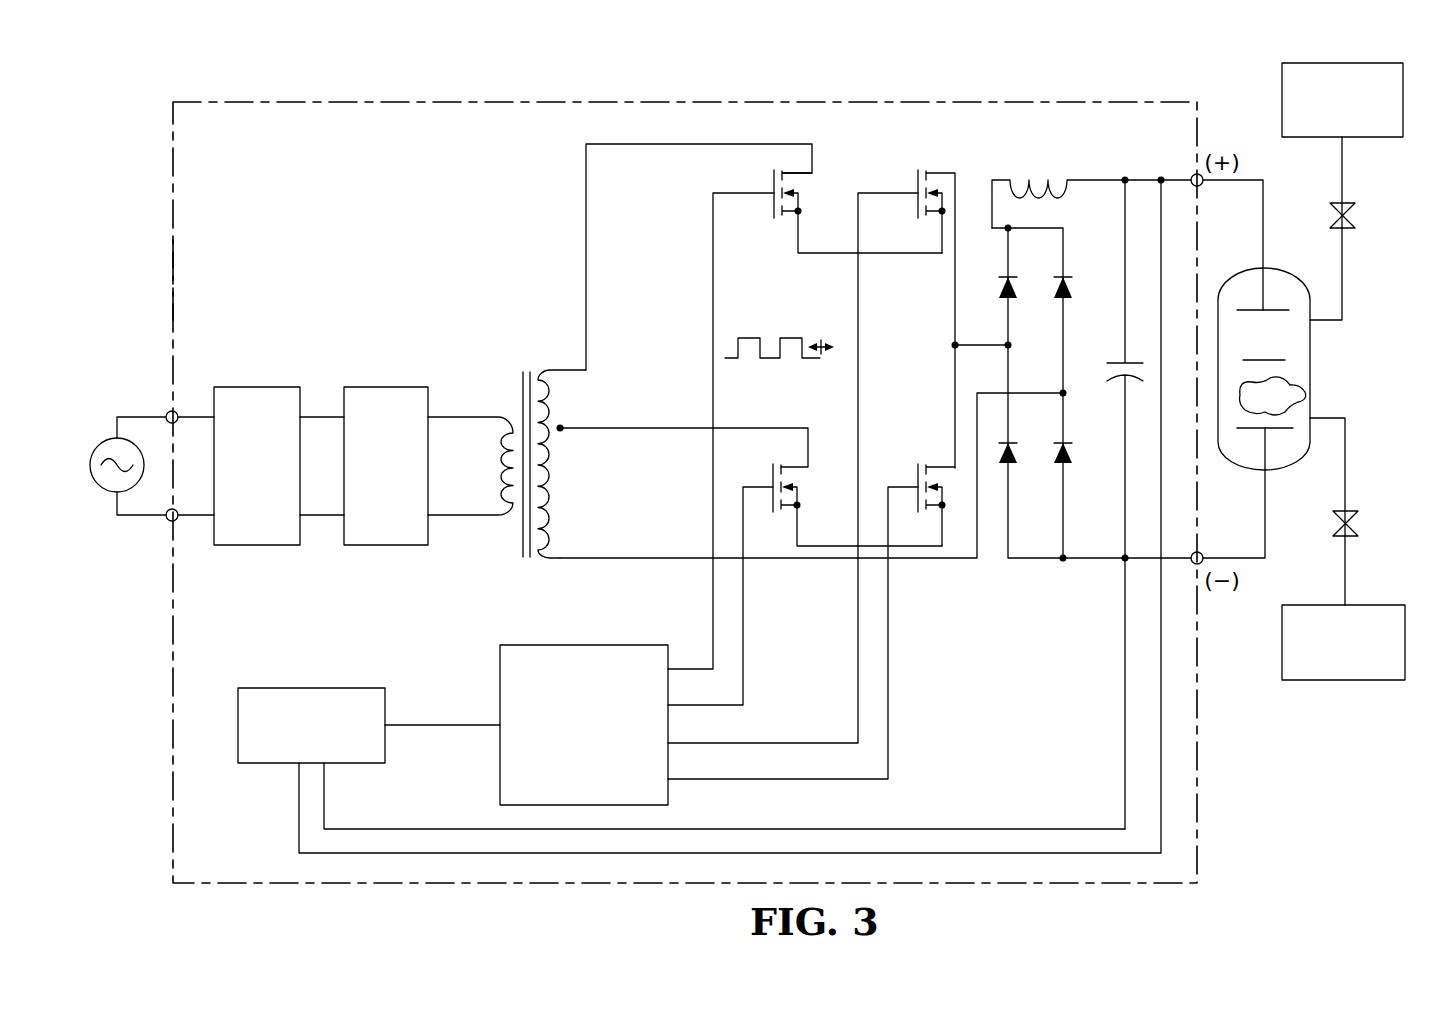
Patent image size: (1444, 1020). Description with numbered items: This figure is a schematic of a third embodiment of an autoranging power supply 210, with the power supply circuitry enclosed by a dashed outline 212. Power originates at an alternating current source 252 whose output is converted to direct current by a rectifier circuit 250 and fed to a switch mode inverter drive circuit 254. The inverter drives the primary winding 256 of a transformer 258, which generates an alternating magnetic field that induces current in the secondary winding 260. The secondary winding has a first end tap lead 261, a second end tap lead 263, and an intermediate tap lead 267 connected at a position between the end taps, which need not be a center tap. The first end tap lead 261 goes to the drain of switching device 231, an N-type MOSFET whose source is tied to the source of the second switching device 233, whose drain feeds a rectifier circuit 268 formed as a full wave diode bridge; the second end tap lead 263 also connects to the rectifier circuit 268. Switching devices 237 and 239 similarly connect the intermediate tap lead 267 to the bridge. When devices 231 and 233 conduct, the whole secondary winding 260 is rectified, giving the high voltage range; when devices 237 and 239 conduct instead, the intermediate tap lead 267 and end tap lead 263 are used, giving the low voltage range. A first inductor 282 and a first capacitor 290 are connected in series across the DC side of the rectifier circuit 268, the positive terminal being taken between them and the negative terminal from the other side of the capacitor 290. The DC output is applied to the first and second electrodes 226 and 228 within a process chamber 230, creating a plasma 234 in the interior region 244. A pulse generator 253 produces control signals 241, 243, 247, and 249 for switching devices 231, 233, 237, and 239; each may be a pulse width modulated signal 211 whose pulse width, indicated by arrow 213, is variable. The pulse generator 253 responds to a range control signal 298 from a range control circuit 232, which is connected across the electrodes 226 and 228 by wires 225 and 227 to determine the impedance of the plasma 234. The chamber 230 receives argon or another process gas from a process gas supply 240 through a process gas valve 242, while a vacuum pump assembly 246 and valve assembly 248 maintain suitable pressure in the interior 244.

The autoranging power supply 210 is at (162, 277).
The pulsed DC power supply 212 is at (192, 74).
The alternating current source 252 is at (100, 440).
The rectifier circuit 250 is at (250, 387).
The switch mode inverter drive circuit 254 is at (378, 387).
The primary winding 256 is at (482, 516).
The transformer 258 is at (514, 383).
The secondary winding 260 is at (565, 369).
The first end tap lead 261 is at (586, 300).
The intermediate tap lead 267 is at (637, 428).
The second end tap lead 263 is at (630, 558).
The switching device 231 is at (772, 172).
The second switching device 233 is at (915, 172).
The switching device 237 is at (770, 472).
The switching device 239 is at (915, 465).
The pulse width modulated signal 211 is at (770, 360).
The arrow 213 is at (828, 354).
The control signal 241 is at (712, 597).
The control signal 247 is at (743, 597).
The control signal 243 is at (857, 665).
The control signal 249 is at (887, 665).
The rectifier circuit 268 is at (1028, 568).
The first inductor 282 is at (1047, 182).
The first capacitor 290 is at (1118, 362).
The pulse generator 253 is at (598, 645).
The range control circuit 232 is at (265, 688).
The range control signal 298 is at (445, 725).
The wire 227 is at (435, 829).
The wire 225 is at (299, 817).
The process chamber 230 is at (1310, 353).
The first electrode 226 is at (1278, 305).
The second electrode 228 is at (1287, 440).
The interior region 244 is at (1264, 346).
The plasma 234 is at (1305, 397).
The vacuum pump assembly 246 is at (1282, 90).
The valve assembly 248 is at (1356, 218).
The process gas supply 240 is at (1342, 681).
The process gas valve 242 is at (1358, 526).